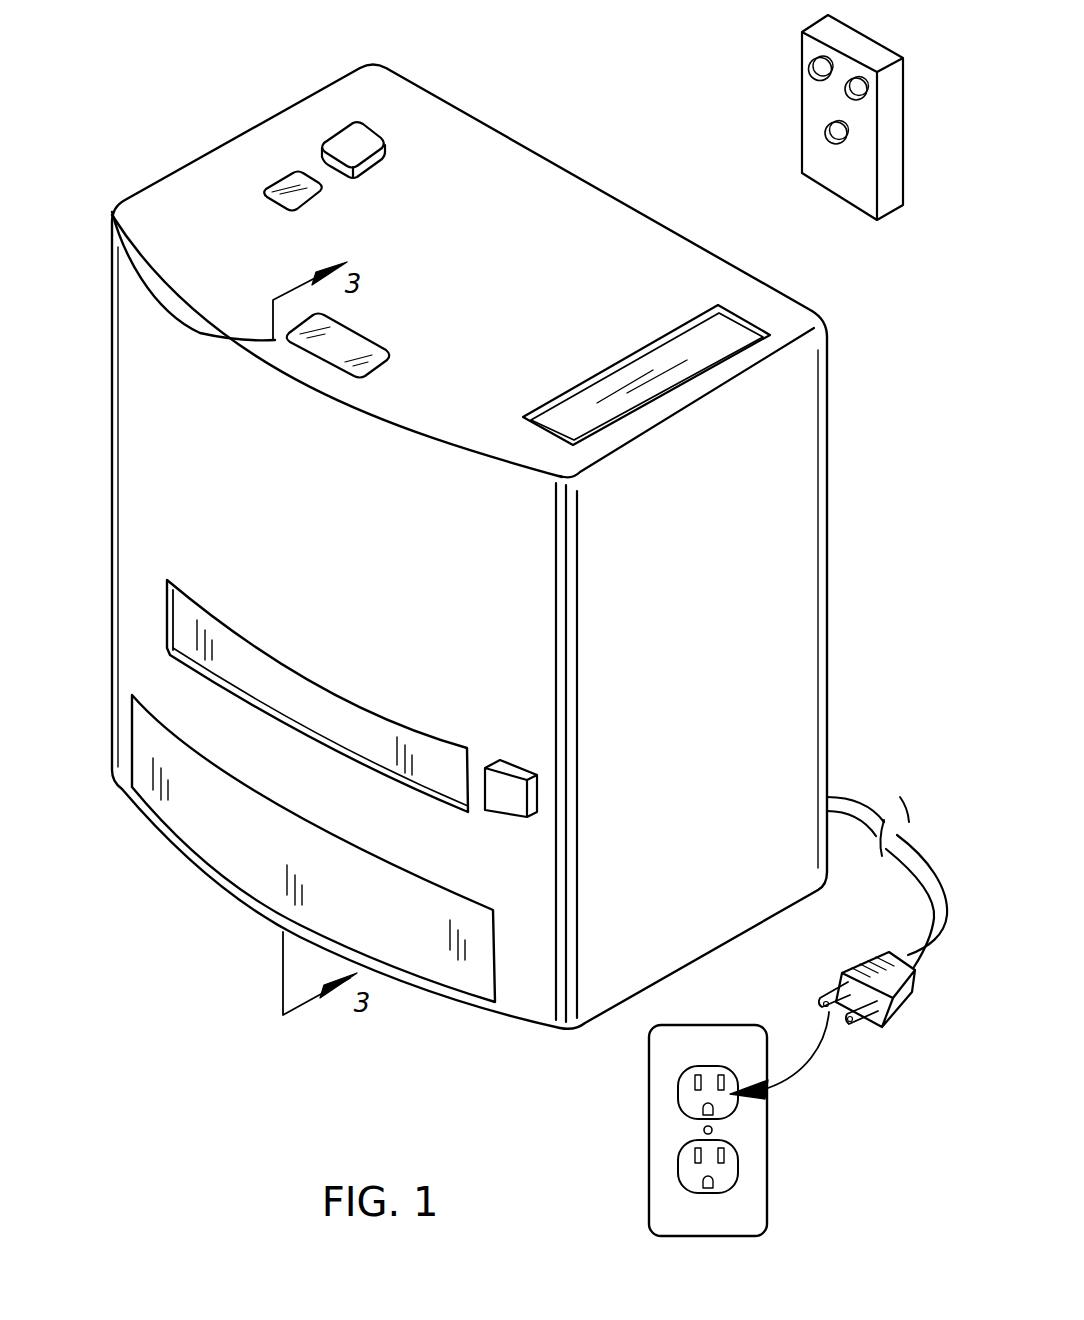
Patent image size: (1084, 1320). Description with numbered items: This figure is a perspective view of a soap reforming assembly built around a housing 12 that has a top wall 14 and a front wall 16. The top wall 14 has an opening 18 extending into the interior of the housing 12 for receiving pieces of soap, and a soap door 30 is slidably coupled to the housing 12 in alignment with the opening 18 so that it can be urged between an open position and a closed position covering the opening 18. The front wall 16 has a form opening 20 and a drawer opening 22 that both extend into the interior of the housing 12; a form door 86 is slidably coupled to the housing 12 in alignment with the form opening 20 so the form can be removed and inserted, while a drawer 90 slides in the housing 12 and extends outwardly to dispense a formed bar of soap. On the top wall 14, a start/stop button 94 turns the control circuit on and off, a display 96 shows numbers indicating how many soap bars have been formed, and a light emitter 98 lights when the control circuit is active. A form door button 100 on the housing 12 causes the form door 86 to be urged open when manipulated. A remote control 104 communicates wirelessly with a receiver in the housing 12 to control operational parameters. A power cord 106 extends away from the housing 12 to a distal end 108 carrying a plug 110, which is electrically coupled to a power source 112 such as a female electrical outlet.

The housing 12 is at (373, 61).
The top wall 14 is at (547, 182).
The front wall 16 is at (137, 368).
The opening 18 is at (685, 333).
The form opening 20 is at (185, 657).
The drawer opening 22 is at (213, 777).
The soap door 30 is at (722, 348).
The form door 86 is at (217, 647).
The drawer 90 is at (132, 752).
The start/stop button 94 is at (350, 137).
The display 96 is at (263, 193).
The light emitter 98 is at (143, 270).
The form door button 100 is at (512, 803).
The remote control 104 is at (802, 90).
The power cord 106 is at (918, 848).
The distal end 108 is at (928, 963).
The plug 110 is at (845, 962).
The power source 112 is at (767, 1141).